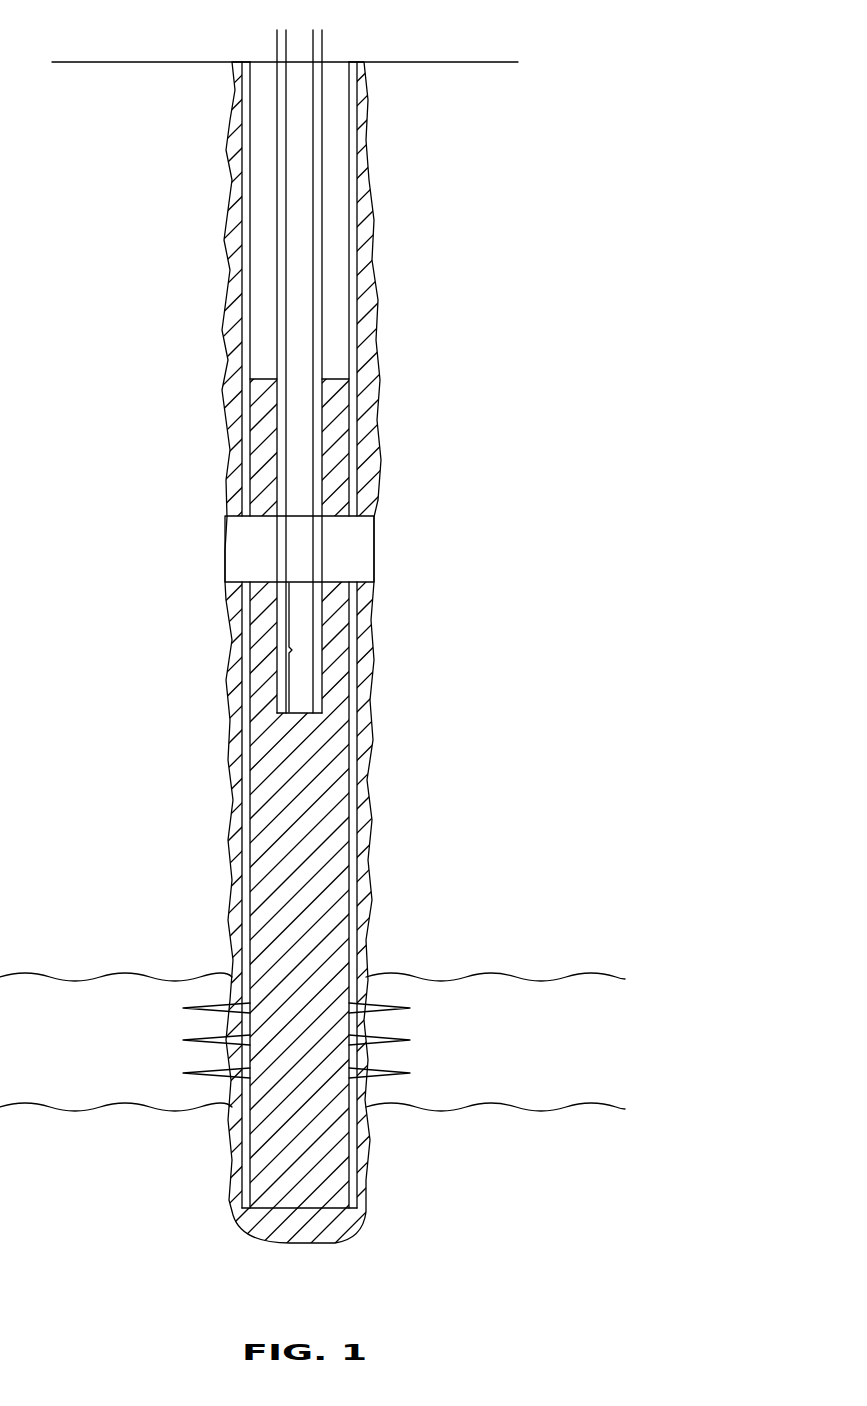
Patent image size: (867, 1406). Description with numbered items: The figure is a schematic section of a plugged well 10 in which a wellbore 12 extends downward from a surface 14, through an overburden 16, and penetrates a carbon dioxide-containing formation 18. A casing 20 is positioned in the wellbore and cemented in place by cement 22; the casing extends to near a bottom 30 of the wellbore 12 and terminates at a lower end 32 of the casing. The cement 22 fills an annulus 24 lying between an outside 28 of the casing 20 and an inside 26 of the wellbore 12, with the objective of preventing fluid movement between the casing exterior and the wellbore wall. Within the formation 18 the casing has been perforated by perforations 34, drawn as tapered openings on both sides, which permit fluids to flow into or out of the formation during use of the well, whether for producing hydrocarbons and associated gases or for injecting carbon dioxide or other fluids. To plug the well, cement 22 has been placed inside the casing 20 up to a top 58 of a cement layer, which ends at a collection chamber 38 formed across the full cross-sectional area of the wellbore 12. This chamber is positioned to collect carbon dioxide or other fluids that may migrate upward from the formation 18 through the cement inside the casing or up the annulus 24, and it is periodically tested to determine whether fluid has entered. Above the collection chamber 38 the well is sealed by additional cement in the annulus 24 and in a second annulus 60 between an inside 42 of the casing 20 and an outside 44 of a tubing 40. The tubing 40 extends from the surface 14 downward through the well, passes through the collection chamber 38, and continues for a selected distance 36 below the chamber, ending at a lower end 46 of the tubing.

The well 10 is at (428, 175).
The wellbore 12 is at (372, 197).
The surface 14 is at (450, 62).
The overburden 16 is at (497, 562).
The carbon dioxide-containing formation 18 is at (578, 1053).
The casing 20 is at (352, 477).
The cement 22 is at (258, 448).
The annulus 24 is at (362, 175).
The inside of wellbore 26 is at (373, 297).
The outside of casing 28 is at (357, 256).
The bottom of wellbore 30 is at (313, 1243).
The lower end of casing 32 is at (355, 1200).
The perforations 34 is at (183, 1073).
The selected distance 36 is at (300, 650).
The collection chamber 38 is at (255, 555).
The tubing 40 is at (283, 363).
The inside of casing 42 is at (257, 292).
The outside of tubing 44 is at (277, 200).
The lower end of tubing 46 is at (290, 713).
The top of cement layer 58 is at (333, 582).
The second annulus 60 is at (258, 492).